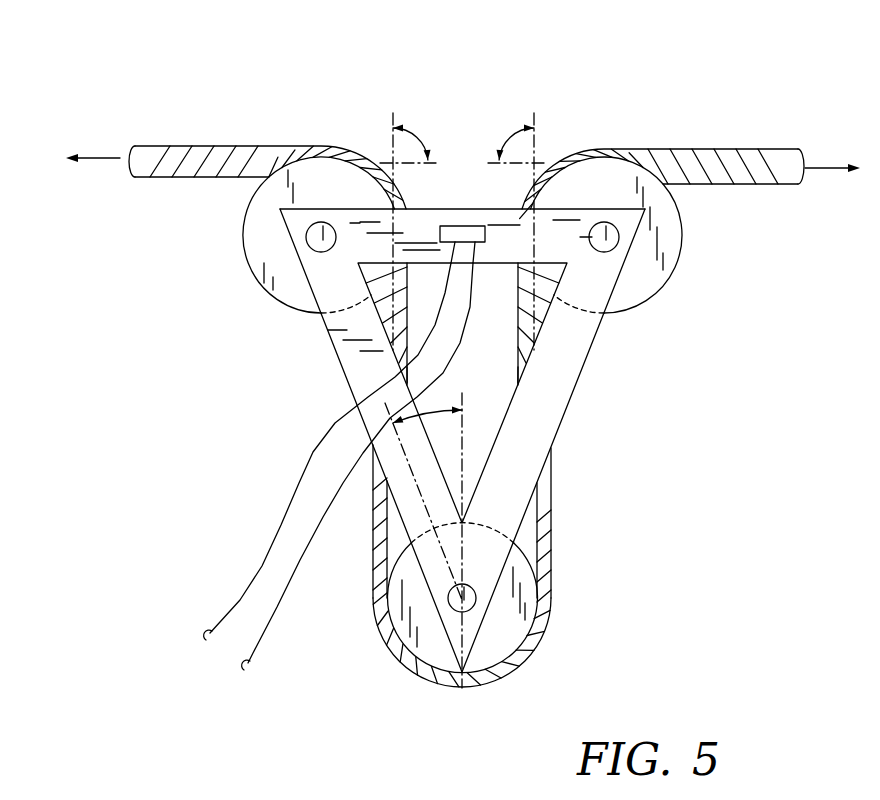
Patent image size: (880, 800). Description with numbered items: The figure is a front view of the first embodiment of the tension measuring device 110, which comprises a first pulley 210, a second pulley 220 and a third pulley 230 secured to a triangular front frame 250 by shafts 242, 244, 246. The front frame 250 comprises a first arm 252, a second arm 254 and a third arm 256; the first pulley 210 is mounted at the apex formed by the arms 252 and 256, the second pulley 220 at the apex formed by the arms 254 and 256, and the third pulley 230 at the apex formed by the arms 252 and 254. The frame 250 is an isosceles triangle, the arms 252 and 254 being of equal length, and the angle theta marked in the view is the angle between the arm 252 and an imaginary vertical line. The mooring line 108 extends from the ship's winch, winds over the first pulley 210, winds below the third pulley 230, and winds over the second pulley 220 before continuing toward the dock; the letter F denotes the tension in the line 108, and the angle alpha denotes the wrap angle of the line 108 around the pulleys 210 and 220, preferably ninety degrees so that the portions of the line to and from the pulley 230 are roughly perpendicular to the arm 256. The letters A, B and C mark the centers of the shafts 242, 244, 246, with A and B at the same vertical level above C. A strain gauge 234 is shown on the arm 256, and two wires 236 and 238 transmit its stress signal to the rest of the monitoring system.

The mooring line 108 is at (200, 158).
The tension measuring device 110 is at (580, 93).
The first pulley 210 is at (262, 212).
The second pulley 220 is at (660, 210).
The third pulley 230 is at (483, 650).
The strain gauge 234 is at (461, 237).
The wire 236 is at (254, 582).
The wire 238 is at (264, 648).
The shaft 242 is at (310, 240).
The shaft 244 is at (617, 242).
The shaft 246 is at (470, 596).
The front frame 250 is at (612, 367).
The first arm 252 is at (372, 338).
The second arm 254 is at (555, 405).
The third arm 256 is at (427, 230).